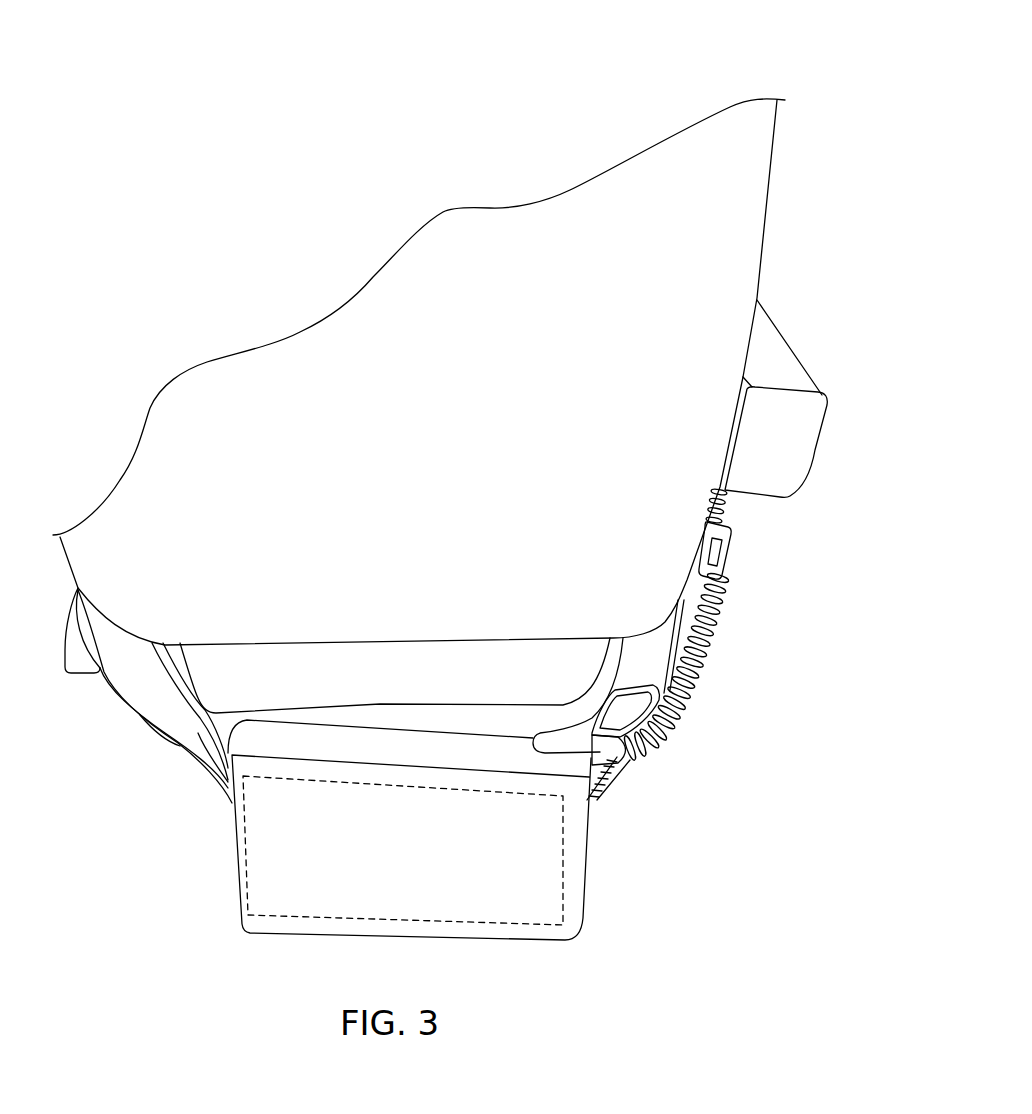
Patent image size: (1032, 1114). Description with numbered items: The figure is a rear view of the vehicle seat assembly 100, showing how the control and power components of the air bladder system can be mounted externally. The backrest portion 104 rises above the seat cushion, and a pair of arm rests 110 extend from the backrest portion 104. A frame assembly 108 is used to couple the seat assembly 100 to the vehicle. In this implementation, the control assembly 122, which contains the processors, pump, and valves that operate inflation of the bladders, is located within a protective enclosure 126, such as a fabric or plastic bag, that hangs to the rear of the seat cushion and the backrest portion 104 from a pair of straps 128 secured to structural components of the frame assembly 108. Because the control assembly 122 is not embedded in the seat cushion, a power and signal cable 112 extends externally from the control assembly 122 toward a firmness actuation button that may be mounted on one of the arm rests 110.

The vehicle seat assembly 100 is at (104, 93).
The backrest portion 104 is at (713, 203).
The arm rest 110 is at (777, 453).
The power and signal cable 112 is at (707, 643).
The frame assembly 108 is at (700, 697).
The straps 128 is at (172, 743).
The protective enclosure 126 is at (233, 857).
The control assembly 122 is at (567, 837).